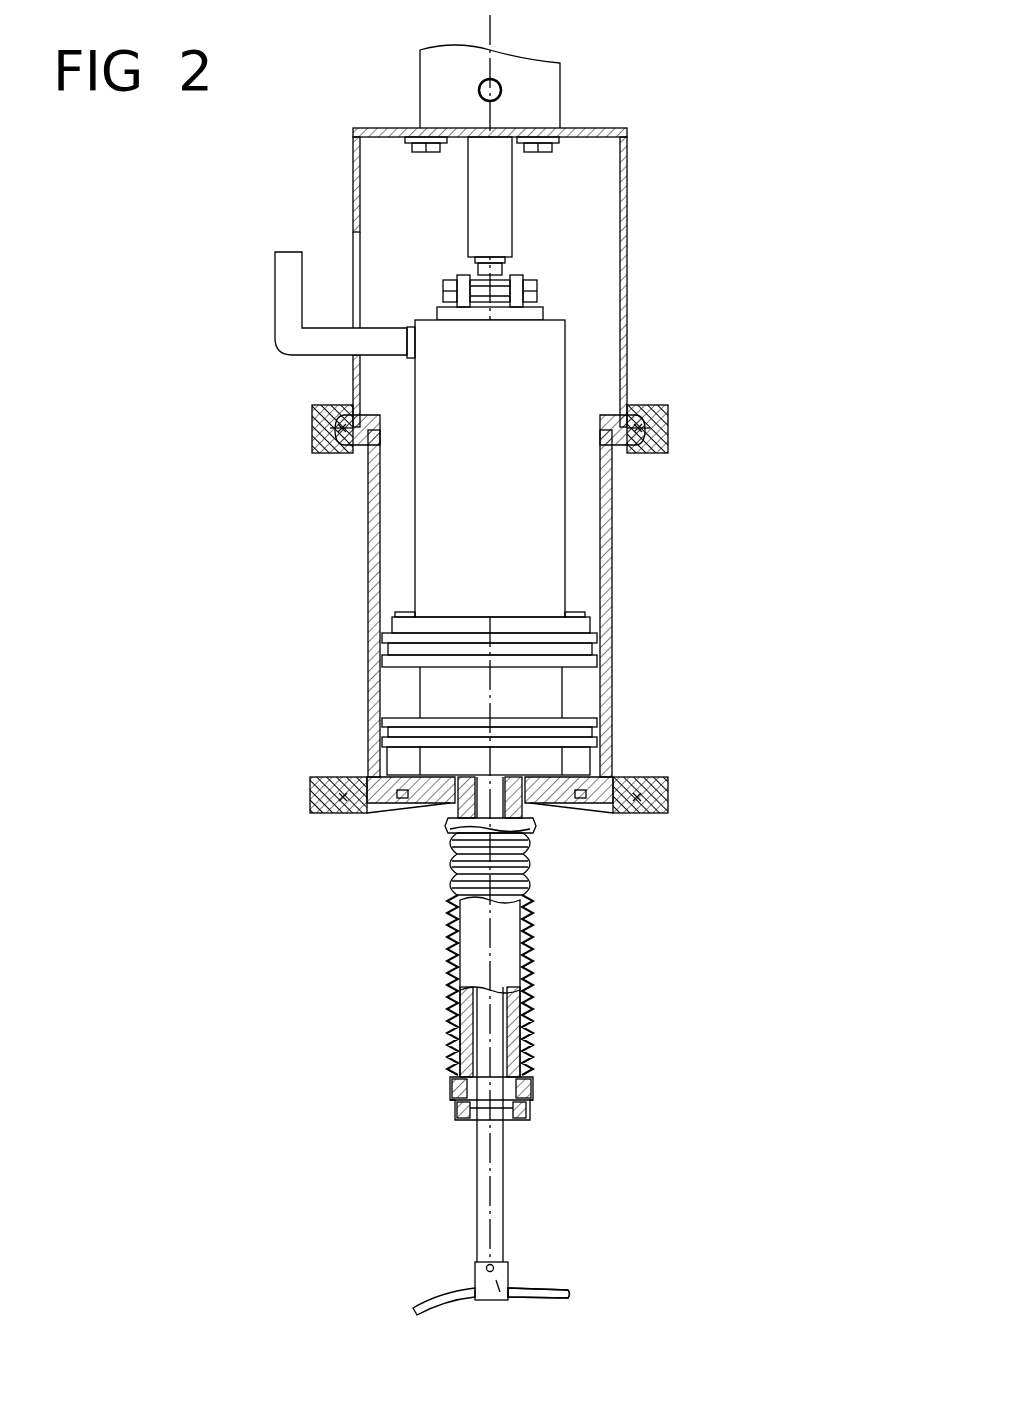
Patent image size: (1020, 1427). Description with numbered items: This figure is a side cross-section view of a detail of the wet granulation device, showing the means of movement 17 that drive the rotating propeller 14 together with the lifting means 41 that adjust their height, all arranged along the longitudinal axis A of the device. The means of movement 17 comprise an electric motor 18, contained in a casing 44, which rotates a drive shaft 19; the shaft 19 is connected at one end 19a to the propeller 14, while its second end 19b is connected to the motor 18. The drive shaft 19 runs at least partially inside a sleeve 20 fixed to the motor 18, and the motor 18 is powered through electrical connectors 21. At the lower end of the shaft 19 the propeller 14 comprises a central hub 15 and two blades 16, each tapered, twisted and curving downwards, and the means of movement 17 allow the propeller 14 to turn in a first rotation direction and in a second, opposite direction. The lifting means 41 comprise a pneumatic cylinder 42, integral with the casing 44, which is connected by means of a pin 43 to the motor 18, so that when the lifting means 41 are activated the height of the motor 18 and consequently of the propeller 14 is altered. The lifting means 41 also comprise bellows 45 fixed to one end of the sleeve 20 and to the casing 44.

The longitudinal axis A is at (490, 32).
The lifting means 41 is at (583, 107).
The pneumatic cylinder 42 is at (500, 202).
The pin 43 is at (500, 287).
The casing 44 is at (627, 317).
The electric motor 18 is at (533, 400).
The means of movement 17 is at (582, 478).
The electrical connectors 21 is at (287, 278).
The bellows 45 is at (518, 848).
The second end 19b is at (487, 803).
The sleeve 20 is at (513, 1022).
The drive shaft 19 is at (497, 1146).
The one end 19a is at (500, 1242).
The propeller 14 is at (522, 1275).
The blades 16 is at (450, 1298).
The central hub 15 is at (500, 1287).